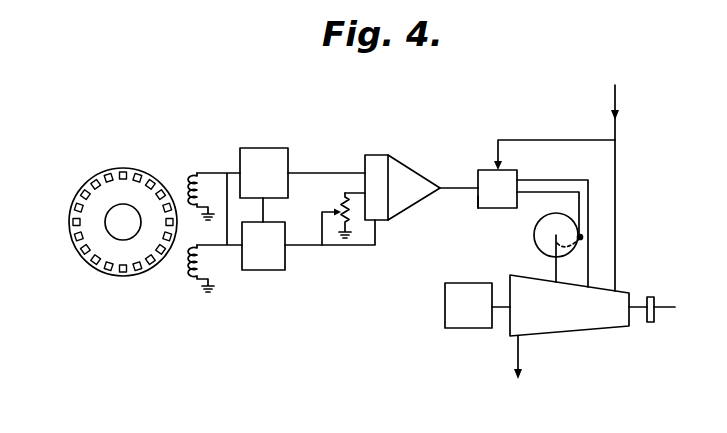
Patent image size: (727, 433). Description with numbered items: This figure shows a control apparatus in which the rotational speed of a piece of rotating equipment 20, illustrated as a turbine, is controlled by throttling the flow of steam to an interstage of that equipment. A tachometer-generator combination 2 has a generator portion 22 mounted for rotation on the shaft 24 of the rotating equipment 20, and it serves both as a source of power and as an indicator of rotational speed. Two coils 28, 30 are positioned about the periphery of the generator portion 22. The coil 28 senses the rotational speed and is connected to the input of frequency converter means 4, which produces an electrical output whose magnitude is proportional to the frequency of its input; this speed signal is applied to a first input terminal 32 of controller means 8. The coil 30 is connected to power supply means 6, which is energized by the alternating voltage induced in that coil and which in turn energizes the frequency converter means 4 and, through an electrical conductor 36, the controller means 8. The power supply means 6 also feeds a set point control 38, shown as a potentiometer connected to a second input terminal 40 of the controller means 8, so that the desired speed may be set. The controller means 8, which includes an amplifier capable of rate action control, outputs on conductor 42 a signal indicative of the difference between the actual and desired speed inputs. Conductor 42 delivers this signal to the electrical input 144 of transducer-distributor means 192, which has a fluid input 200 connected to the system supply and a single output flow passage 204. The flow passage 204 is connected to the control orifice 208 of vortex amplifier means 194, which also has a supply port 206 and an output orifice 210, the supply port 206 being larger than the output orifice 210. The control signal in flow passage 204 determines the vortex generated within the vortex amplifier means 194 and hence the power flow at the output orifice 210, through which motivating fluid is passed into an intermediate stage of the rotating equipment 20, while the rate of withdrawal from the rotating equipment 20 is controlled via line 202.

The tachometer-generator combination 2 is at (72, 180).
The generator portion 22 is at (112, 236).
The coil 28 is at (189, 176).
The coil 30 is at (188, 272).
The frequency converter means 4 is at (262, 148).
The power supply means 6 is at (258, 271).
The first input terminal 32 is at (309, 172).
The electrical conductor 36 is at (378, 228).
The set point control 38 is at (342, 203).
The second input terminal 40 is at (349, 193).
The controller means 8 is at (412, 170).
The conductor 42 is at (455, 187).
The electrical input 144 is at (478, 196).
The transducer-distributor means 192 is at (517, 173).
The fluid input 200 is at (552, 140).
The line 202 is at (563, 180).
The output flow passage 204 is at (577, 193).
The control orifice 208 is at (580, 213).
The supply port 206 is at (583, 240).
The vortex amplifier means 194 is at (534, 233).
The output orifice 210 is at (555, 273).
The rotating equipment 20 is at (552, 336).
The shaft 24 is at (636, 308).